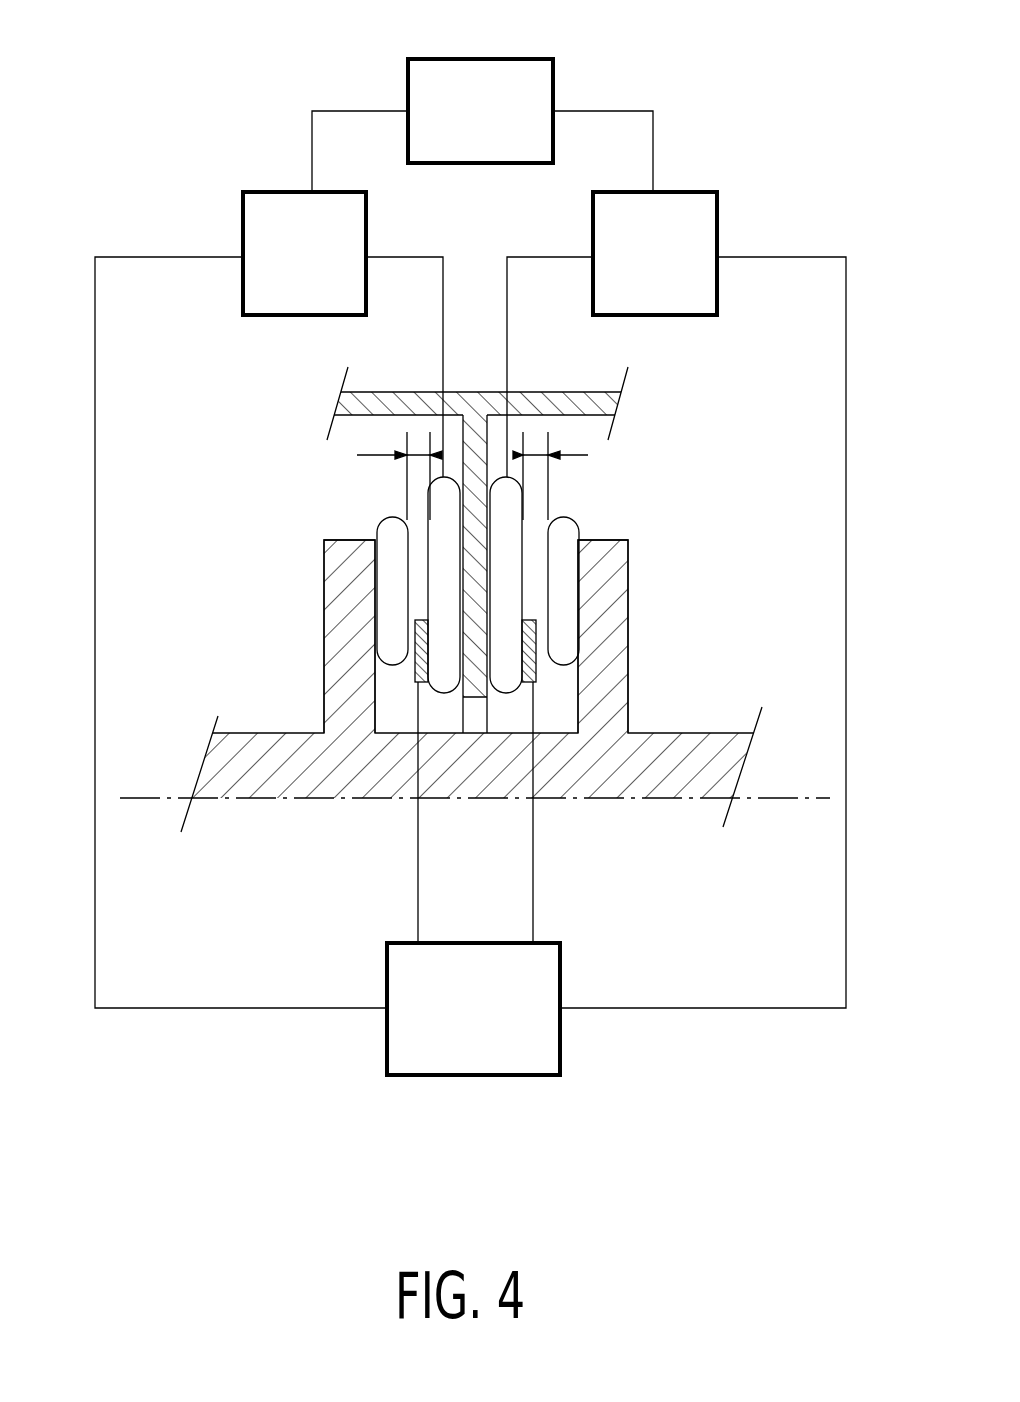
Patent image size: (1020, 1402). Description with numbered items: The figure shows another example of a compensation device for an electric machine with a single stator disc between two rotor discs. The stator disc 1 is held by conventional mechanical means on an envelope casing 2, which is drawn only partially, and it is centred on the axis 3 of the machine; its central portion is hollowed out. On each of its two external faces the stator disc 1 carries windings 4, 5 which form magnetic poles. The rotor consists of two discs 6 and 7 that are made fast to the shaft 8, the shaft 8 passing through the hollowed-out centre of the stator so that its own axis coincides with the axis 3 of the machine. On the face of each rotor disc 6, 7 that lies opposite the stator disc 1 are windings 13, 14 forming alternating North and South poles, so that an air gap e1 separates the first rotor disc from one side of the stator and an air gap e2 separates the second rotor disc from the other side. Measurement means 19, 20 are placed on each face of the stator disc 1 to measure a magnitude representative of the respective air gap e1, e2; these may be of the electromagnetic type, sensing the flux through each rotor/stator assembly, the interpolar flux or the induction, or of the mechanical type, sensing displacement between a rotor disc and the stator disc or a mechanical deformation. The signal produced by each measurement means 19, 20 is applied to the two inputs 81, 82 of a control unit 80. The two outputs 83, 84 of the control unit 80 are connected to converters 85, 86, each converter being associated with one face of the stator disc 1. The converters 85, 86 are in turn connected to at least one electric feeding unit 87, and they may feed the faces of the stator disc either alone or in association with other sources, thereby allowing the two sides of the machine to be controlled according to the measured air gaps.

The stator disc 1 is at (475, 460).
The envelope casing 2 is at (553, 407).
The axis of the machine 3 is at (800, 797).
The winding 4 is at (437, 503).
The winding 5 is at (508, 505).
The rotor disc 6 is at (323, 570).
The rotor disc 7 is at (628, 553).
The shaft 8 is at (233, 777).
The winding 13 is at (392, 535).
The winding 14 is at (563, 533).
The measurement means 19 is at (415, 680).
The measurement means 20 is at (536, 680).
The air gap e1 is at (399, 472).
The air gap e2 is at (554, 472).
The control unit 80 is at (498, 1077).
The input of the control unit 81 is at (417, 942).
The input of the control unit 82 is at (533, 942).
The output of the control unit 83 is at (387, 1012).
The output of the control unit 84 is at (560, 1012).
The converter 85 is at (243, 228).
The converter 86 is at (717, 218).
The electric feeding unit 87 is at (515, 59).